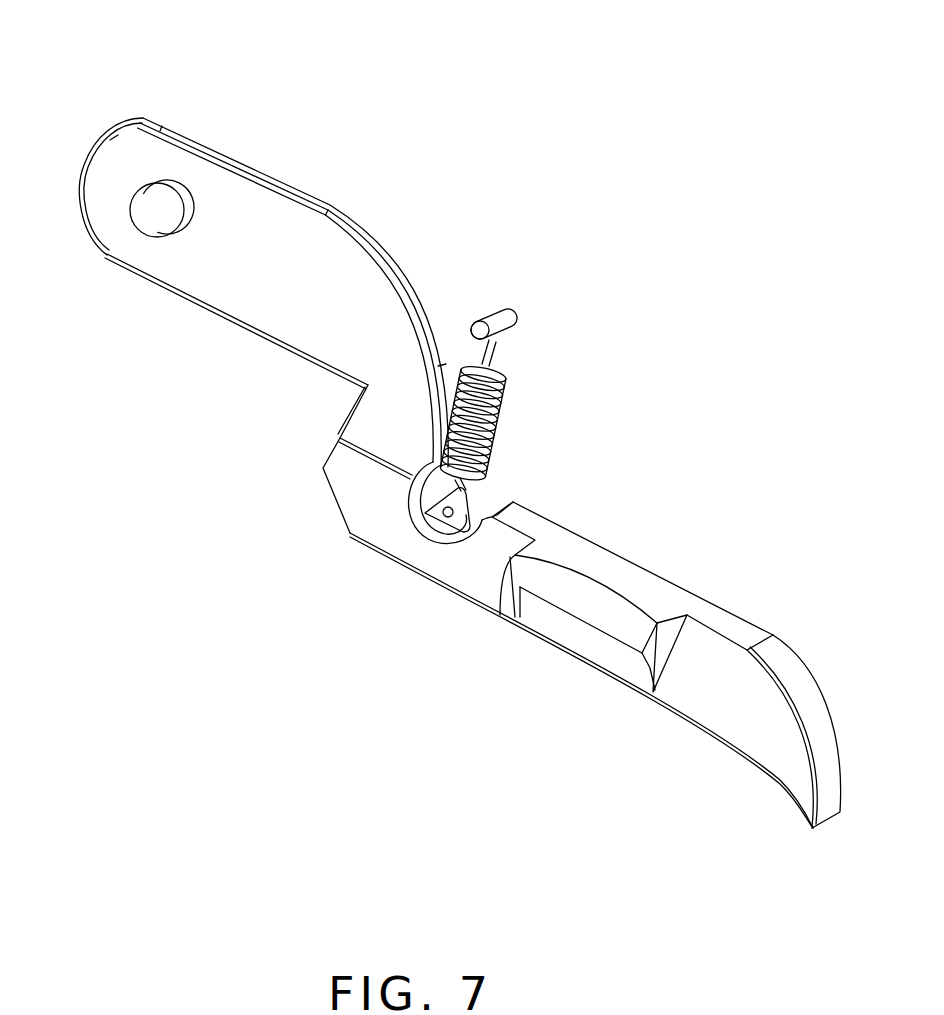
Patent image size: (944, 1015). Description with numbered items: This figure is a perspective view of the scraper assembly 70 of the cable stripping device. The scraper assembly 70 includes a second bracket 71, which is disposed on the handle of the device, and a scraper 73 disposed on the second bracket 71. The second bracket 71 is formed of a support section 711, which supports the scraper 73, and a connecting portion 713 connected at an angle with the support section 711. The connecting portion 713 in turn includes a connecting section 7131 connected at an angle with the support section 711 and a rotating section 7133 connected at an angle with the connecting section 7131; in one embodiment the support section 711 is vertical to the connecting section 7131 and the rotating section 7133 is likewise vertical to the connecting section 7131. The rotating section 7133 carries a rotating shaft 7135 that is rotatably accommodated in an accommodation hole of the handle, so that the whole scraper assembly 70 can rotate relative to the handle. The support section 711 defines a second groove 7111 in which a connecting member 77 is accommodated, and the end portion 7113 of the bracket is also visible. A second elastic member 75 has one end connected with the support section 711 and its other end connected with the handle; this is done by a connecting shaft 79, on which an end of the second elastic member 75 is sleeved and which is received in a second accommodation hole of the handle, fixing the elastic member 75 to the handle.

The scraper assembly 70 is at (473, 36).
The second bracket 71 is at (353, 490).
The support section 711 is at (368, 532).
The second groove 7111 is at (480, 537).
The hook end of locking member 7113 is at (755, 723).
The connecting portion 713 is at (288, 300).
The connecting section 7131 is at (385, 415).
The rotating section 7133 is at (242, 272).
The rotating shaft 7135 is at (157, 212).
The scraper 73 is at (535, 613).
The second elastic member 75 is at (468, 433).
The connecting member 77 is at (458, 497).
The connecting shaft 79 is at (495, 342).